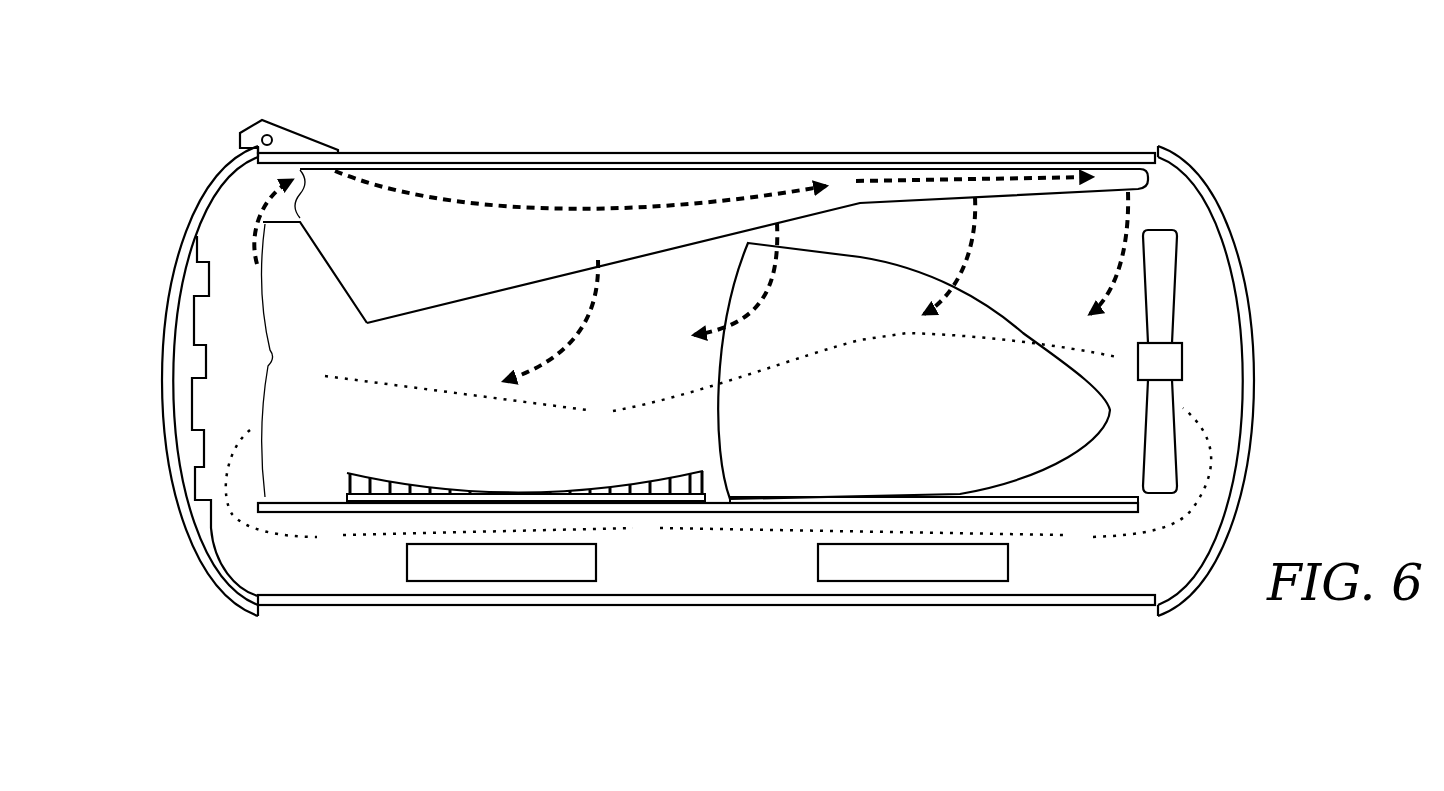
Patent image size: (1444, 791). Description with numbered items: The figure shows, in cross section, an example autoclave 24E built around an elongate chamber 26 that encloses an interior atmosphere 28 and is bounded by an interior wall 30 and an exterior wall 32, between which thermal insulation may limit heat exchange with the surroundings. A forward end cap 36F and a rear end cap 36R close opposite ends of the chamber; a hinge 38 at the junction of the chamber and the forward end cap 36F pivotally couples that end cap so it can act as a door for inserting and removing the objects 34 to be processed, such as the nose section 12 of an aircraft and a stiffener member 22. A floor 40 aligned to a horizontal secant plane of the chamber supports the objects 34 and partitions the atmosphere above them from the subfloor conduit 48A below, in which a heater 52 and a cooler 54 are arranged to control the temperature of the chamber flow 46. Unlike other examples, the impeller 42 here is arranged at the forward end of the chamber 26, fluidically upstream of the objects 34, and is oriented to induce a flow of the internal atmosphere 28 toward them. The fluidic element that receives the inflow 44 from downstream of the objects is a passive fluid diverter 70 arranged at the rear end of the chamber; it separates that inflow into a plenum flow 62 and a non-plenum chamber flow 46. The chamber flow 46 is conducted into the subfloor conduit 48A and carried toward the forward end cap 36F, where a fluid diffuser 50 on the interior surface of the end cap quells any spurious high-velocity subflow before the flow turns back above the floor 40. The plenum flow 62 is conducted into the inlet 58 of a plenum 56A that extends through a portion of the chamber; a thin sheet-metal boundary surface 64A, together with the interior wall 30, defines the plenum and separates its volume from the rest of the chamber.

The nose section 12 is at (900, 382).
The stiffener member 22 is at (446, 493).
The autoclave 24E is at (488, 72).
The elongate chamber 26 is at (837, 148).
The interior atmosphere 28 is at (1032, 250).
The interior wall 30 is at (1122, 595).
The exterior wall 32 is at (858, 152).
The objects 34 is at (626, 380).
The forward end cap 36F is at (163, 378).
The rear end cap 36R is at (1255, 372).
The hinge 38 is at (303, 132).
The floor 40 is at (1125, 498).
The impeller 42 is at (1147, 373).
The inflow 44 is at (317, 410).
The chamber flow 46 is at (220, 430).
The subfloor conduit 48A is at (696, 565).
The fluid diffuser 50 is at (208, 548).
The heater 52 is at (489, 574).
The cooler 54 is at (899, 574).
The plenum 56A is at (444, 255).
The inlet 58 is at (315, 194).
The plenum flow 62 is at (559, 204).
The boundary surface 64A is at (405, 312).
The passive fluid diverter 70 is at (279, 360).